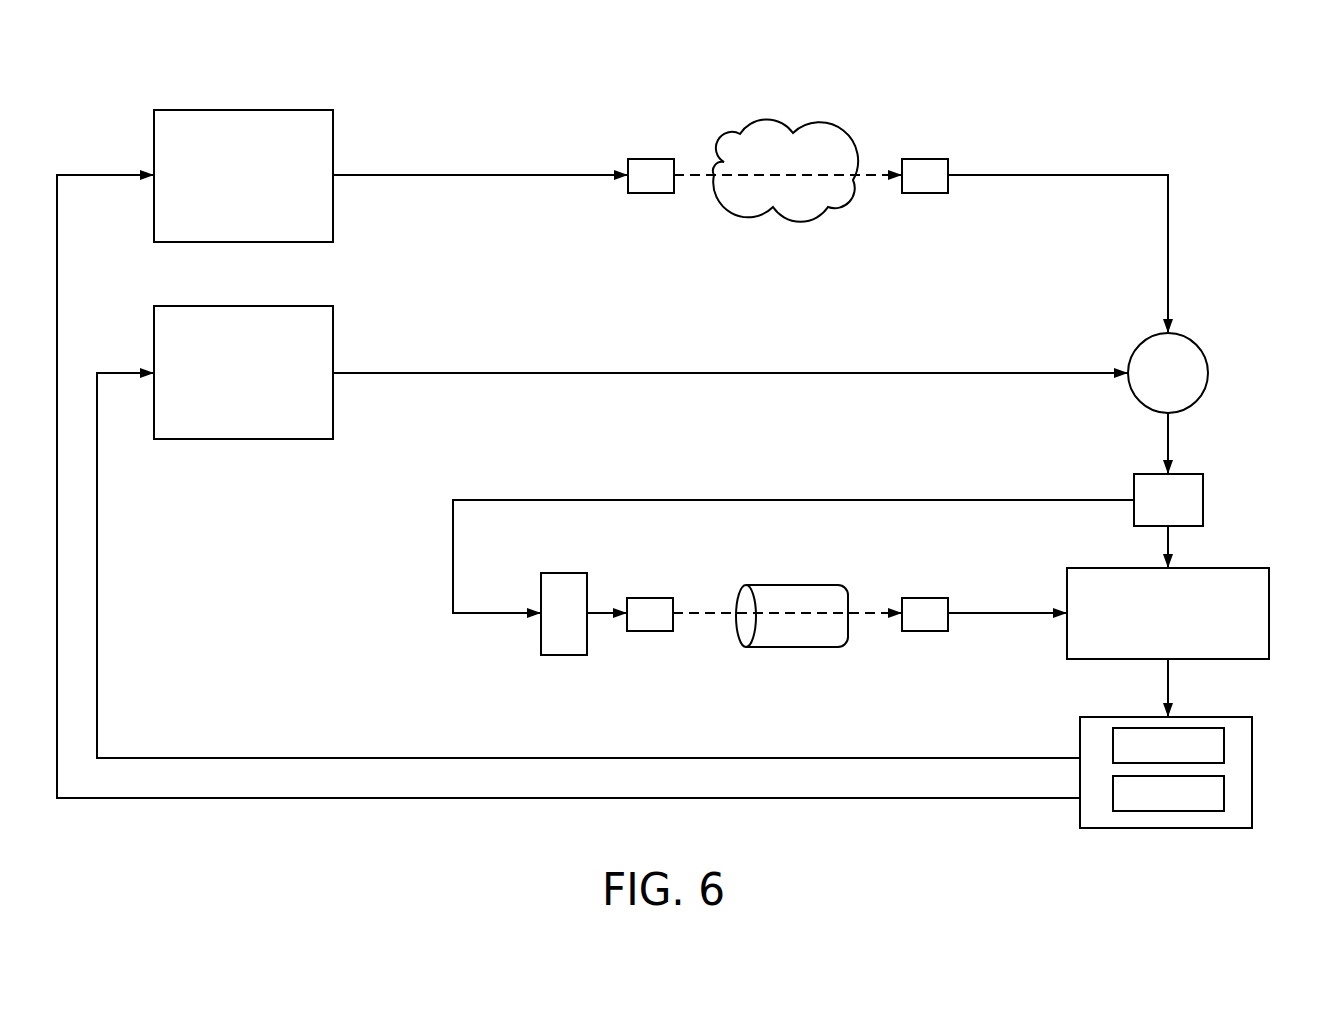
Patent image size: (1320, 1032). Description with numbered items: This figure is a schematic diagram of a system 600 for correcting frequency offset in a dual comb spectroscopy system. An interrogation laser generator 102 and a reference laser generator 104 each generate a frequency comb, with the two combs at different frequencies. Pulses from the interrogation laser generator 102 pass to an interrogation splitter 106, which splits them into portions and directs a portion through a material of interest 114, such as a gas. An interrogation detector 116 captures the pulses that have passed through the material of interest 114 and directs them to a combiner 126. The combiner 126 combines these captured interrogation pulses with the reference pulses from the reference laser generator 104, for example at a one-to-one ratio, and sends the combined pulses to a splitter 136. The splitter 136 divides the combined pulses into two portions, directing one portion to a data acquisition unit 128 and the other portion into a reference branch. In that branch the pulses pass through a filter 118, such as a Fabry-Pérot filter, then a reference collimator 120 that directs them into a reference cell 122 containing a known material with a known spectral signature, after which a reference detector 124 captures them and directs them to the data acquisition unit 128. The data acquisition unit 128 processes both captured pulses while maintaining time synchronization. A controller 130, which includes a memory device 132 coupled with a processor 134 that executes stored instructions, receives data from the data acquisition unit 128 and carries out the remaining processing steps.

The system 600 is at (1156, 92).
The interrogation laser generator 102 is at (195, 109).
The reference laser generator 104 is at (195, 305).
The interrogation splitter 106 is at (640, 158).
The material of interest 114 is at (818, 120).
The interrogation detector 116 is at (918, 158).
The combiner 126 is at (1143, 344).
The splitter 136 is at (1148, 473).
The data acquisition unit 128 is at (1122, 567).
The filter 118 is at (565, 572).
The reference collimator 120 is at (638, 597).
The reference cell 122 is at (768, 584).
The reference detector 124 is at (919, 597).
The controller 130 is at (1100, 716).
The memory device 132 is at (1224, 745).
The processor 134 is at (1224, 795).